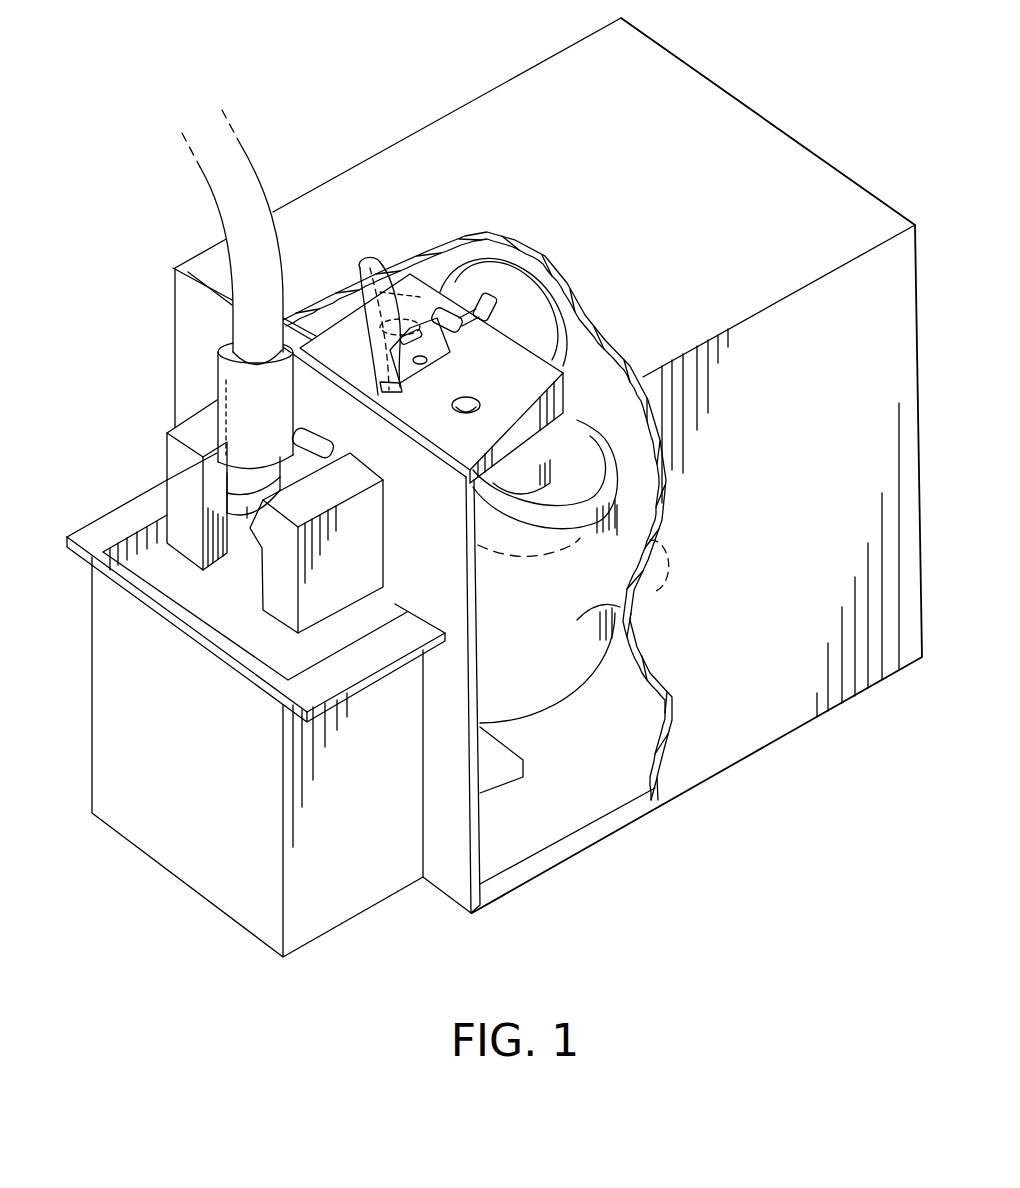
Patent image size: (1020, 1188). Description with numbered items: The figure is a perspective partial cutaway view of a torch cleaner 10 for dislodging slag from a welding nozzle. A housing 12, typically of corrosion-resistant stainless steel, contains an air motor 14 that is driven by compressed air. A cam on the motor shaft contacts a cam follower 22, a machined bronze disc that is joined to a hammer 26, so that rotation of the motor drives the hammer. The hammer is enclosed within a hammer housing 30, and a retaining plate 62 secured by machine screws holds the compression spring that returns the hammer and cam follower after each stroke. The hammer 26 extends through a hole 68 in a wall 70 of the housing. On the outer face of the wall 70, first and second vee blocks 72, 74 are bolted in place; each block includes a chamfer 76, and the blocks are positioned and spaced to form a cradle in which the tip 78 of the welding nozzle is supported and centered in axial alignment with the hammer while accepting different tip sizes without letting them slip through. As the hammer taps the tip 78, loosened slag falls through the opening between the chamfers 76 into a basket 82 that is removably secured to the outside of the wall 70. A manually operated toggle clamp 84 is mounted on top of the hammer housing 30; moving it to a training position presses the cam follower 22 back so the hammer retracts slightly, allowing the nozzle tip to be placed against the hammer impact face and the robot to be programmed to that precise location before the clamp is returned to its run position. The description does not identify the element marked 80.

The torch cleaner 10 is at (346, 133).
The housing 12 is at (767, 464).
The air motor 14 is at (499, 631).
The cam follower 22 is at (522, 292).
The hammer 26 is at (343, 413).
The hammer housing 30 is at (462, 388).
The retaining plate 62 is at (603, 350).
The hole 68 is at (310, 433).
The wall 70 is at (443, 763).
The first vee block 72 is at (355, 570).
The second vee block 74 is at (187, 537).
The chamfer 76 is at (200, 507).
The tip 78 is at (257, 490).
The direction arrow 80 is at (238, 566).
The basket 82 is at (215, 858).
The toggle clamp 84 is at (438, 303).